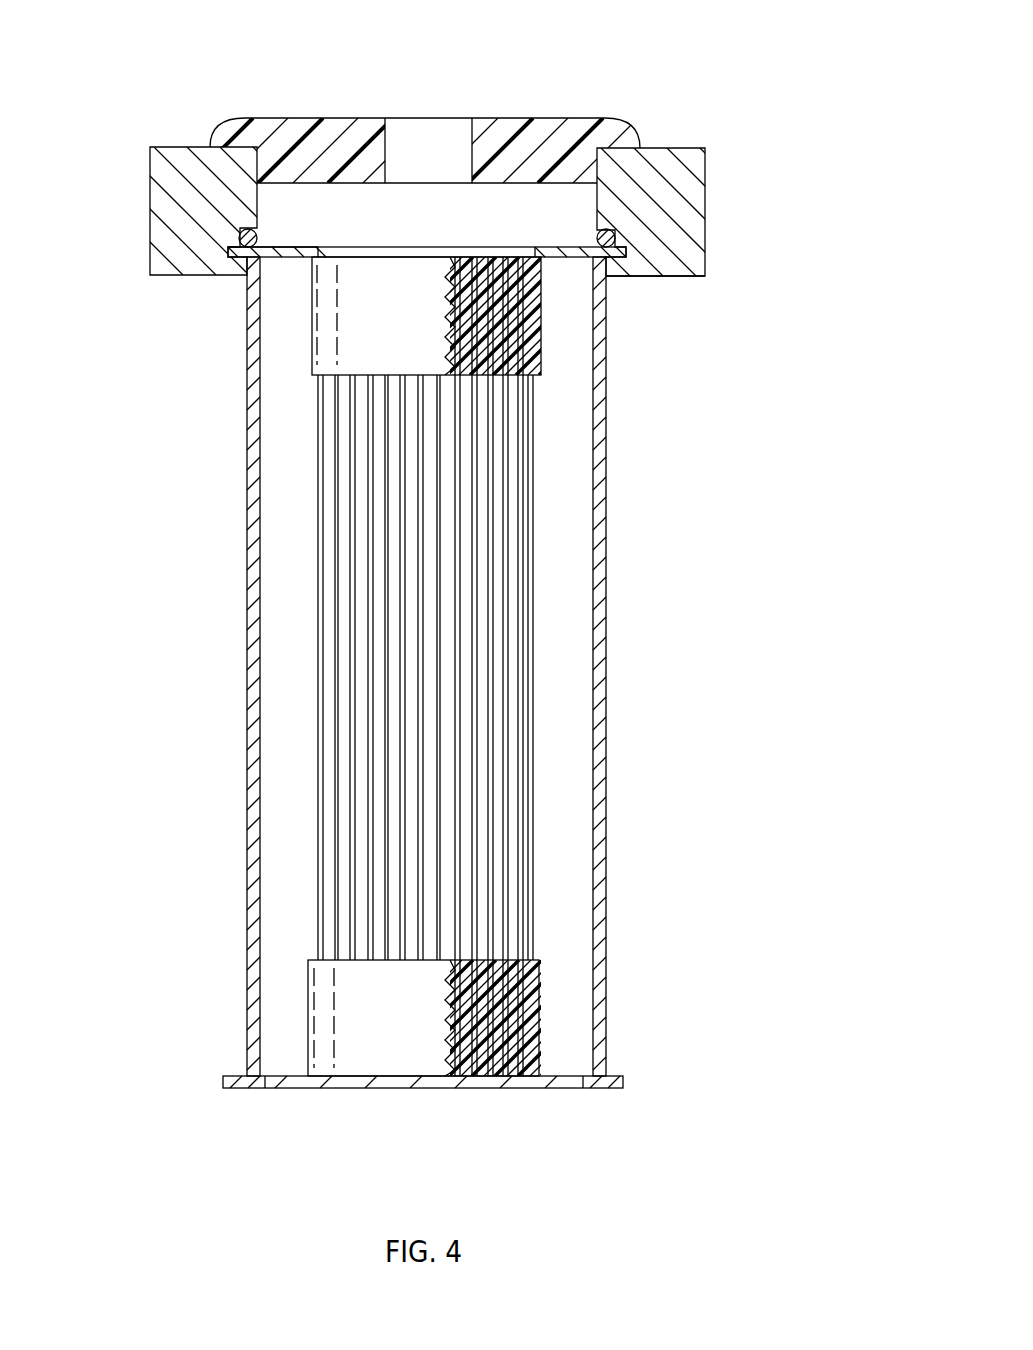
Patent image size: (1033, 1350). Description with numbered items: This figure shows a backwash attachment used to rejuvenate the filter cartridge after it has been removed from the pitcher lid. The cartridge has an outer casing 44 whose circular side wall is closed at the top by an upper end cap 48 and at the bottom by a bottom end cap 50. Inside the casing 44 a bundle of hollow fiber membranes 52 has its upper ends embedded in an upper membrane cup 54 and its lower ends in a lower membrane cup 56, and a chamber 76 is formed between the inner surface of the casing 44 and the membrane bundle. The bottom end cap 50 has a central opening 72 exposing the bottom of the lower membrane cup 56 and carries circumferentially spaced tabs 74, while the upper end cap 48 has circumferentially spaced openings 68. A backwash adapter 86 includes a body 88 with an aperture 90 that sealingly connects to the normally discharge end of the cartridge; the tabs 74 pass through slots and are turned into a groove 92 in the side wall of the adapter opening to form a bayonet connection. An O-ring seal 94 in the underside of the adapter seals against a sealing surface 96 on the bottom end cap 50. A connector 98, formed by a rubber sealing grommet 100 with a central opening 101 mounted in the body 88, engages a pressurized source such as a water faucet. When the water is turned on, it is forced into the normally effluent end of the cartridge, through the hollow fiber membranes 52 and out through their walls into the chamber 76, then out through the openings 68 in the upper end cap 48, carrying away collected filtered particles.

The outer casing 44 is at (596, 702).
The upper end cap 48 is at (484, 1098).
The bottom end cap 50 is at (280, 233).
The hollow fiber membranes 52 is at (549, 592).
The upper membrane cup 54 is at (345, 999).
The lower membrane cup 56 is at (353, 324).
The openings 68 is at (287, 1090).
The central opening 72 is at (320, 256).
The tabs 74 is at (238, 254).
The chamber 76 is at (277, 618).
The backwash adapter 86 is at (676, 144).
The body 88 is at (683, 277).
The aperture 90 is at (585, 198).
The groove 92 is at (620, 258).
The O-ring seal 94 is at (240, 232).
The sealing surface 96 is at (618, 247).
The connector 98 is at (509, 113).
The rubber sealing grommet 100 is at (570, 133).
The central opening 101 is at (472, 150).